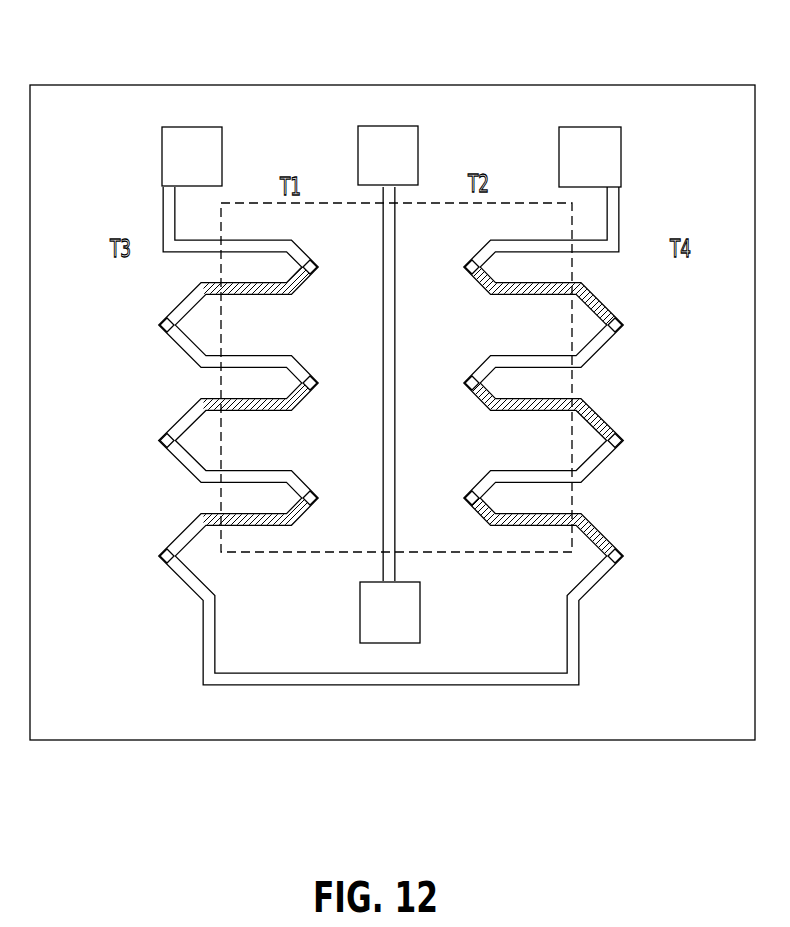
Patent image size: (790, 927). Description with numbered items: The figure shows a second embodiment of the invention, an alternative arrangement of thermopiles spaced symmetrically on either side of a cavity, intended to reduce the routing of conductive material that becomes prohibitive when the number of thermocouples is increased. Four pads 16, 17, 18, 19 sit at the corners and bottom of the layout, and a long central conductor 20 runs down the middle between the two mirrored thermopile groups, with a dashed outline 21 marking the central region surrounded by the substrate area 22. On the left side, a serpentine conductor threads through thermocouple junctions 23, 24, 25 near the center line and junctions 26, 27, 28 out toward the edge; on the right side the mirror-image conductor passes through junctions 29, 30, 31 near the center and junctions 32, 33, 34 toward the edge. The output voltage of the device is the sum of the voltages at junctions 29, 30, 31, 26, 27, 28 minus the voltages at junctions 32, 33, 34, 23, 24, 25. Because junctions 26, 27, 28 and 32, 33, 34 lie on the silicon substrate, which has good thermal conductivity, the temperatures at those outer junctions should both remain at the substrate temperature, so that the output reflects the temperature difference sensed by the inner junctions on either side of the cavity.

The first contact pad 16 is at (199, 133).
The second contact pad 17 is at (608, 137).
The third contact pad 18 is at (386, 131).
The fourth contact pad 19 is at (410, 616).
The central conductor line 20 is at (394, 301).
The test region 21 is at (521, 203).
The substrate 22 is at (107, 144).
The thermocouple junction 23 is at (318, 262).
The thermocouple junction 24 is at (318, 378).
The thermocouple junction 25 is at (318, 493).
The thermocouple junction 26 is at (161, 319).
The thermocouple junction 27 is at (161, 434).
The thermocouple junction 28 is at (161, 550).
The thermocouple junction 29 is at (462, 262).
The thermocouple junction 30 is at (462, 378).
The thermocouple junction 31 is at (462, 493).
The thermocouple junction 32 is at (622, 321).
The thermocouple junction 33 is at (622, 436).
The thermocouple junction 34 is at (622, 552).